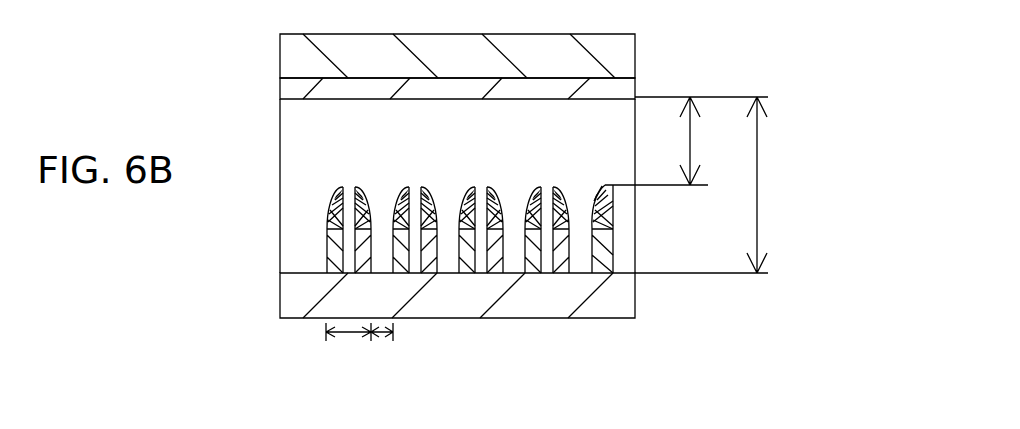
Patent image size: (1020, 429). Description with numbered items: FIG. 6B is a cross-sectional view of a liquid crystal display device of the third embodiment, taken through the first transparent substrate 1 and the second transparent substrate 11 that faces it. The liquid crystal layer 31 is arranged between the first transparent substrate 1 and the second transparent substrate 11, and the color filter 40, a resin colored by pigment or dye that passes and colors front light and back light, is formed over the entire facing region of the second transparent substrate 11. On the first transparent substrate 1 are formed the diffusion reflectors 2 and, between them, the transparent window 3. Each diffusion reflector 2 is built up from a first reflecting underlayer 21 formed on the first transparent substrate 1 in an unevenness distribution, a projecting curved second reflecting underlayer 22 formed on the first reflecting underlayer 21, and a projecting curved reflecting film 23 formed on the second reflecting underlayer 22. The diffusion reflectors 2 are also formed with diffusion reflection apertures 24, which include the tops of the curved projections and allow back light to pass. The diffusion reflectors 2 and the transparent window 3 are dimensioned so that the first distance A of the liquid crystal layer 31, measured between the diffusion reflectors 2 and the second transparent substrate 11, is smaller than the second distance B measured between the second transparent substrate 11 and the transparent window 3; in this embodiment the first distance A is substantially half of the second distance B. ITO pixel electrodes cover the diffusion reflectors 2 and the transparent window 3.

The first transparent substrate 1 is at (300, 294).
The second transparent substrate 11 is at (290, 51).
The color filter 40 is at (290, 85).
The liquid crystal layer 31 is at (290, 130).
The first reflecting underlayer 21 is at (328, 247).
The second reflecting underlayer 22 is at (328, 217).
The reflecting film 23 is at (328, 195).
The diffusion reflection aperture 24 is at (350, 191).
The diffusion reflector 2 is at (348, 346).
The transparent window 3 is at (382, 346).
The first distance A is at (686, 127).
The second distance B is at (701, 171).